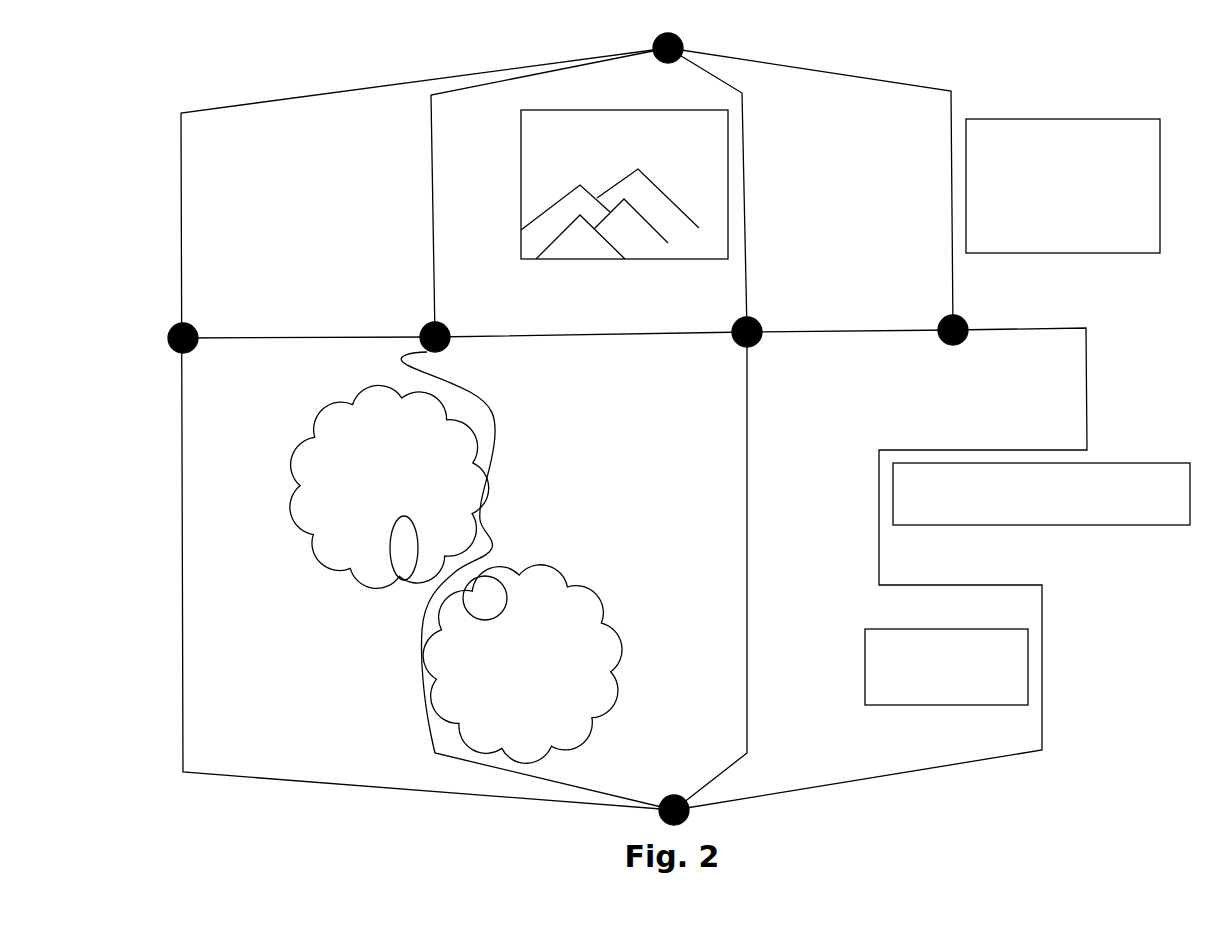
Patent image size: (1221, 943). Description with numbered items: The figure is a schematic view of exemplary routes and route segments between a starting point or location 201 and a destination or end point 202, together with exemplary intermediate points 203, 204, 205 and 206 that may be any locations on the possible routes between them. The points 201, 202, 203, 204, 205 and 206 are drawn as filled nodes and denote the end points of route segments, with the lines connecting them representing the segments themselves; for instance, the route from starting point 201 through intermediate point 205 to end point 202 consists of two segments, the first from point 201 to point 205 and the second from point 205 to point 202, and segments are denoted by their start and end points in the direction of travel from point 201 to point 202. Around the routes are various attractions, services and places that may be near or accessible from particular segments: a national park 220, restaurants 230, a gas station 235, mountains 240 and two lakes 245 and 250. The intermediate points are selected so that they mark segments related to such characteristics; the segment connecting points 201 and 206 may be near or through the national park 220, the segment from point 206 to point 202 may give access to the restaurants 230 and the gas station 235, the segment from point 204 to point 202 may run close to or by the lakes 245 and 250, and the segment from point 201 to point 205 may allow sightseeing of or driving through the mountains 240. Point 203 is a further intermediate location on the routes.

The starting point 201 is at (652, 42).
The end point 202 is at (660, 797).
The intermediate point 203 is at (170, 323).
The intermediate point 204 is at (425, 324).
The intermediate point 205 is at (757, 343).
The intermediate point 206 is at (950, 315).
The national park 220 is at (1102, 117).
The restaurants 230 is at (1071, 523).
The gas station 235 is at (863, 656).
The mountains 240 is at (610, 260).
The lake 245 is at (365, 553).
The lake 250 is at (530, 582).